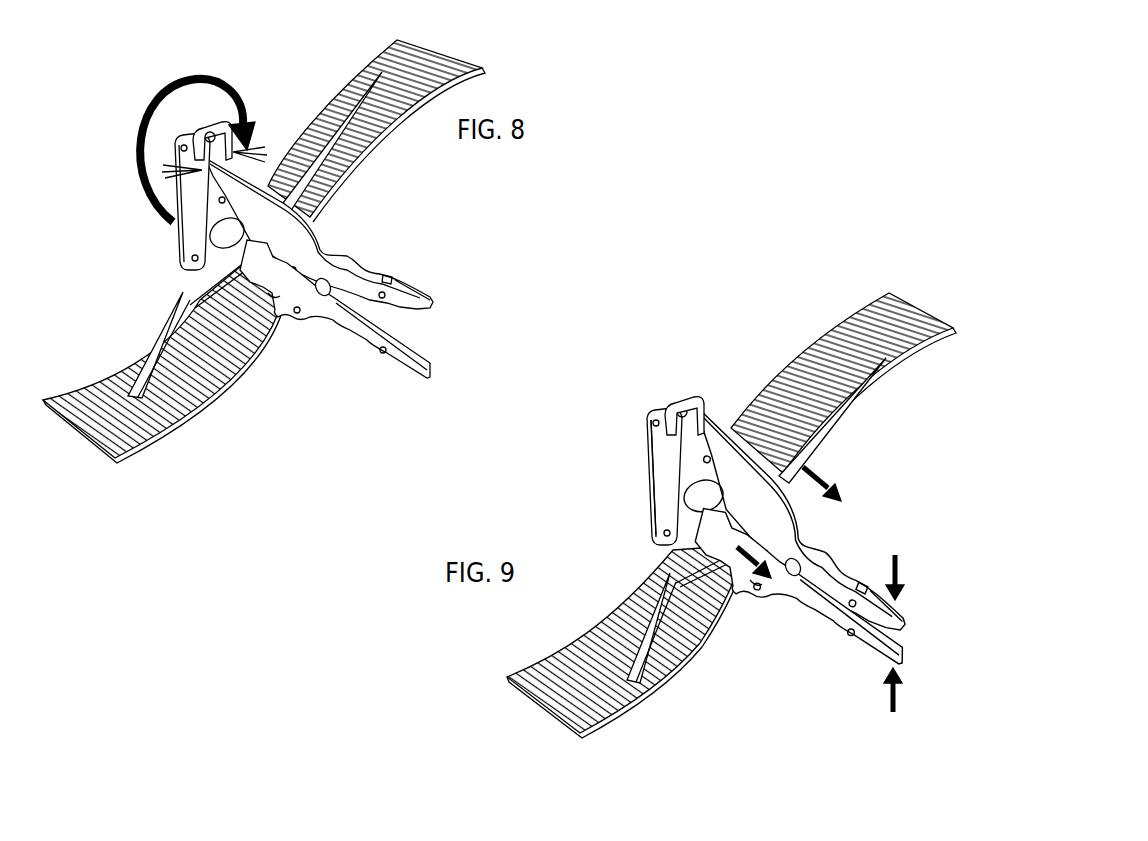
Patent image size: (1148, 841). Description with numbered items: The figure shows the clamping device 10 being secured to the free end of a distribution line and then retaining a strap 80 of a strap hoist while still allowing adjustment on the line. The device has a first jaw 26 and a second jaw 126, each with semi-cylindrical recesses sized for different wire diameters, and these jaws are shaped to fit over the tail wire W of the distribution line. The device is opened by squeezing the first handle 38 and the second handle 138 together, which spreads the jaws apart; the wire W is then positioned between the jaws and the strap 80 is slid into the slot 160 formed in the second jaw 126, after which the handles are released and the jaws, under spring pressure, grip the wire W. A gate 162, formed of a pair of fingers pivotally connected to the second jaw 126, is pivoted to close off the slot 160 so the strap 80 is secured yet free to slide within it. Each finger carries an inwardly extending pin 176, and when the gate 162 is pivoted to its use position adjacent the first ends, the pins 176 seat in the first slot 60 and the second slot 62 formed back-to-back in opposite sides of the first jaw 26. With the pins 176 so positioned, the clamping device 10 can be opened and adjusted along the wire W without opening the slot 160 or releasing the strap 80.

In FIG. 8, the clamping device 10 is at (300, 232).
In FIG. 9, the clamping device 10 is at (776, 535).
In FIG. 8, the first jaw 26 is at (297, 248).
In FIG. 9, the first jaw 26 is at (785, 530).
In FIG. 8, the first handle 38 is at (397, 280).
In FIG. 9, the first handle 38 is at (843, 570).
In FIG. 9, the first slot 60 is at (670, 403).
In FIG. 9, the second slot 62 is at (700, 407).
In FIG. 8, the strap 80 is at (383, 53).
In FIG. 9, the strap 80 is at (830, 333).
In FIG. 8, the second jaw 126 is at (302, 292).
In FIG. 9, the second jaw 126 is at (778, 575).
In FIG. 8, the second handle 138 is at (393, 360).
In FIG. 9, the second handle 138 is at (828, 612).
In FIG. 8, the slot 160 is at (280, 310).
In FIG. 9, the slot 160 is at (738, 587).
In FIG. 8, the gate 162 is at (192, 222).
In FIG. 9, the gate 162 is at (658, 505).
In FIG. 8, the pin 176 is at (207, 128).
In FIG. 9, the pin 176 is at (680, 453).
In FIG. 8, the tail wire W is at (310, 132).
In FIG. 9, the tail wire W is at (857, 407).